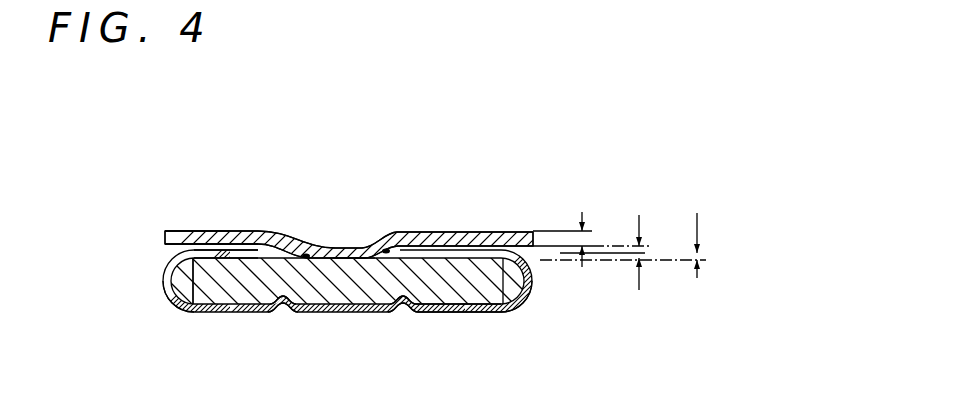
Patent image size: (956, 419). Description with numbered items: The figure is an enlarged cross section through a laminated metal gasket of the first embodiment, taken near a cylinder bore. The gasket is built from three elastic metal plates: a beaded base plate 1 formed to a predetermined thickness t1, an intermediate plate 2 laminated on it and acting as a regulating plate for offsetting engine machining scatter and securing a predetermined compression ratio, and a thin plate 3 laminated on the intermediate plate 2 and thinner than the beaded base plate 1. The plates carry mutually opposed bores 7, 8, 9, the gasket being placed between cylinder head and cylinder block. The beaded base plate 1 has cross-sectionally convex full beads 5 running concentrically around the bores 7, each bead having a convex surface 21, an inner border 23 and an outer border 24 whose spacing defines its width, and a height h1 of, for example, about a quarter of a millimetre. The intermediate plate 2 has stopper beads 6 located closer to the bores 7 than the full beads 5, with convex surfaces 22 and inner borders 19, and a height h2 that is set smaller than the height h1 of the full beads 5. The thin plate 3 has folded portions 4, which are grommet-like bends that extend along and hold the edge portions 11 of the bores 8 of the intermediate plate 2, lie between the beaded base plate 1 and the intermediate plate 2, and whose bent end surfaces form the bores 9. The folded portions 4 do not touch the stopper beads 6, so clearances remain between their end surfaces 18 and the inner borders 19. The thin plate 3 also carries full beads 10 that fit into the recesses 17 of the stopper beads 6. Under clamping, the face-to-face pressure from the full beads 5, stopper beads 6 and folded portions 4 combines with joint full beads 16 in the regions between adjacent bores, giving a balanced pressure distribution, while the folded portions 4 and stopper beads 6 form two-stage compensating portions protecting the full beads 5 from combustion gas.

The beaded base plate 1 is at (469, 232).
The intermediate plate 2 is at (242, 284).
The thin plate 3 is at (480, 313).
The folded portions 4 is at (200, 236).
The full beads 5 is at (349, 248).
The stopper beads 6 is at (281, 252).
The bores 7 is at (163, 237).
The bores 8 is at (176, 301).
The bores 9 is at (163, 281).
The full beads 10 is at (287, 308).
The edge portions 11 is at (214, 306).
The joint full beads 16 is at (364, 254).
The recesses 17 is at (300, 311).
The end surfaces 18 is at (242, 250).
The inner borders 19 is at (256, 244).
The convex surfaces 21 is at (335, 248).
The convex surfaces 22 is at (289, 240).
The inner border 23 is at (306, 252).
The outer border 24 is at (386, 250).
The thickness t1 is at (584, 232).
The height h1 is at (640, 257).
The height h2 is at (702, 260).